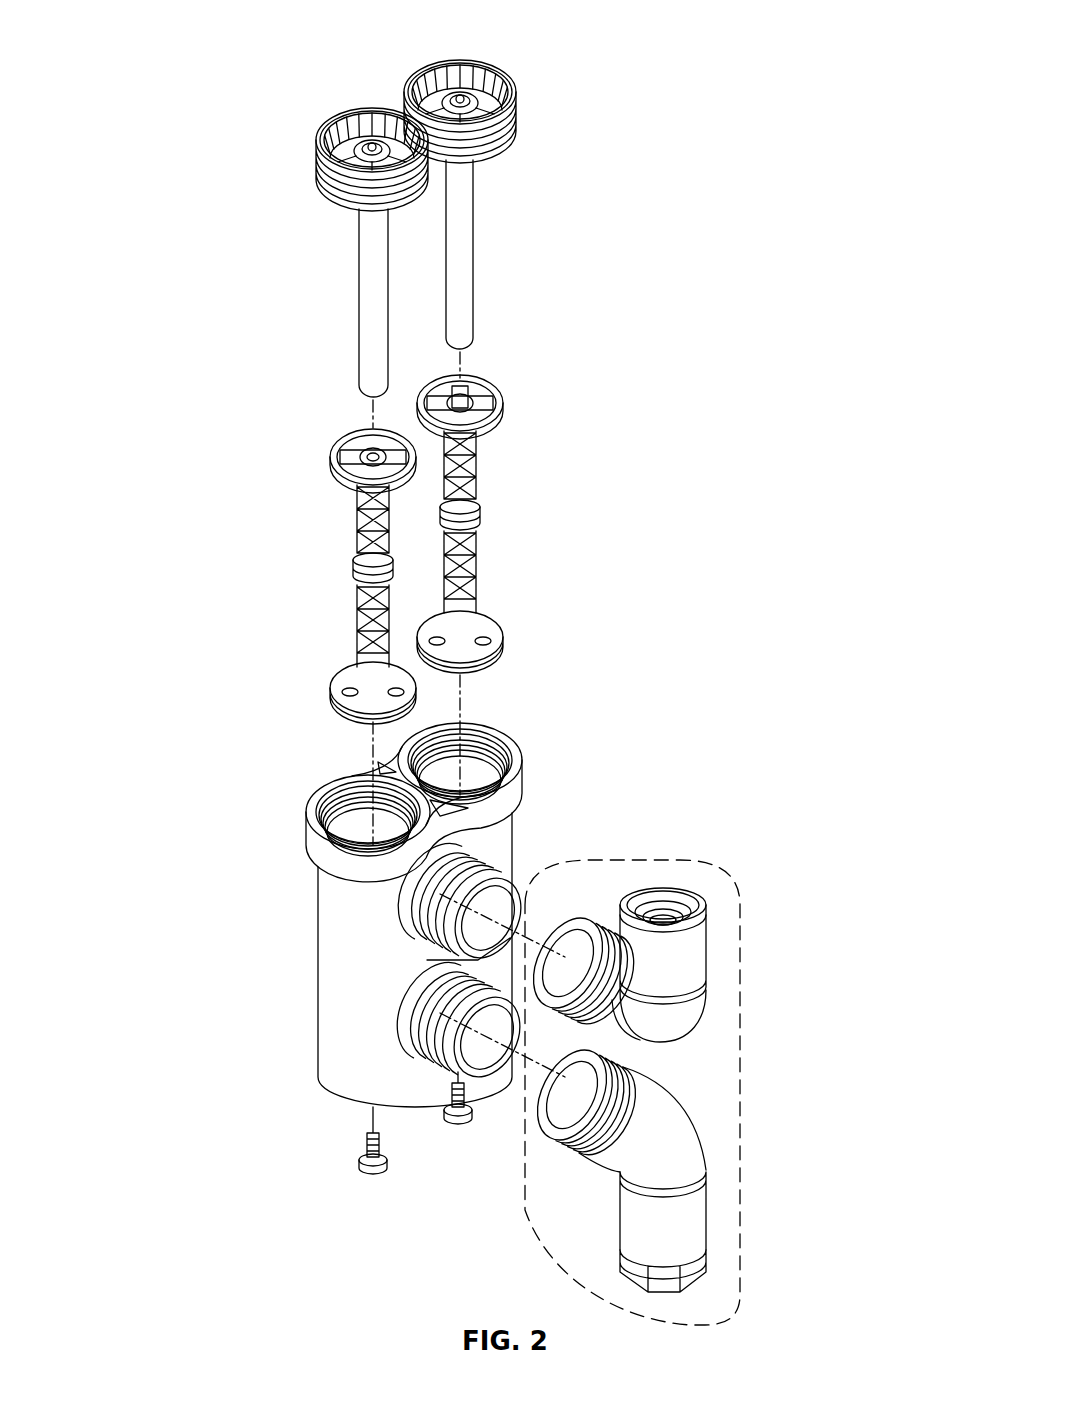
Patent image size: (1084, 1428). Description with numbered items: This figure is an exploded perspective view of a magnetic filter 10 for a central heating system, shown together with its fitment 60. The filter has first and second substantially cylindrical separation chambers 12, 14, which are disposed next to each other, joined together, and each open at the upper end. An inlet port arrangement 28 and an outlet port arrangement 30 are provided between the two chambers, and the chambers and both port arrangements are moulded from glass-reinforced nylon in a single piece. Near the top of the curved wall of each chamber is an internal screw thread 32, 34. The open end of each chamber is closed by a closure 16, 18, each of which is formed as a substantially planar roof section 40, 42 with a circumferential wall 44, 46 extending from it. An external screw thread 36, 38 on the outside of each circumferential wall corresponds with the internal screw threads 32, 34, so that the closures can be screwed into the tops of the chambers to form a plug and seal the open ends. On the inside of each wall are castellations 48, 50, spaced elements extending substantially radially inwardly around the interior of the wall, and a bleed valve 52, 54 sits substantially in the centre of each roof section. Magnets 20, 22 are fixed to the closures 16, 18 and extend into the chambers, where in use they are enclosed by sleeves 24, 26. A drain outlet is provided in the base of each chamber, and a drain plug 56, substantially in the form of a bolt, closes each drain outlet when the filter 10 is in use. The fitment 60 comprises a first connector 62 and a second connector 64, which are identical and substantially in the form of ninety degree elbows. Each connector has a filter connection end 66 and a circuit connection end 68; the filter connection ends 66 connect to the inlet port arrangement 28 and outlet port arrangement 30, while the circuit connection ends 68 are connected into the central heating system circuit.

The magnetic filter 10 is at (275, 960).
The first separation chamber 12 is at (346, 1033).
The second separation chamber 14 is at (498, 843).
The closure 16 is at (324, 130).
The closure 18 is at (512, 72).
The magnet 20 is at (368, 332).
The magnet 22 is at (468, 305).
The sleeve 24 is at (362, 545).
The sleeve 26 is at (472, 520).
The inlet port arrangement 28 is at (514, 884).
The outlet port arrangement 30 is at (473, 1080).
The internal screw thread 32 is at (330, 800).
The internal screw thread 34 is at (498, 748).
The external screw thread 36 is at (330, 190).
The external screw thread 38 is at (518, 128).
The roof section 40 is at (346, 115).
The roof section 42 is at (482, 78).
The circumferential wall 44 is at (372, 118).
The circumferential wall 46 is at (517, 95).
The castellations 48 is at (386, 120).
The castellations 50 is at (452, 68).
The bleed valve 52 is at (388, 160).
The bleed valve 54 is at (492, 132).
The drain plug 56 is at (458, 1125).
The fitment 60 is at (694, 858).
The first connector 62 is at (690, 967).
The second connector 64 is at (678, 1148).
The filter connection end 66 is at (592, 932).
The circuit connection end 68 is at (700, 897).